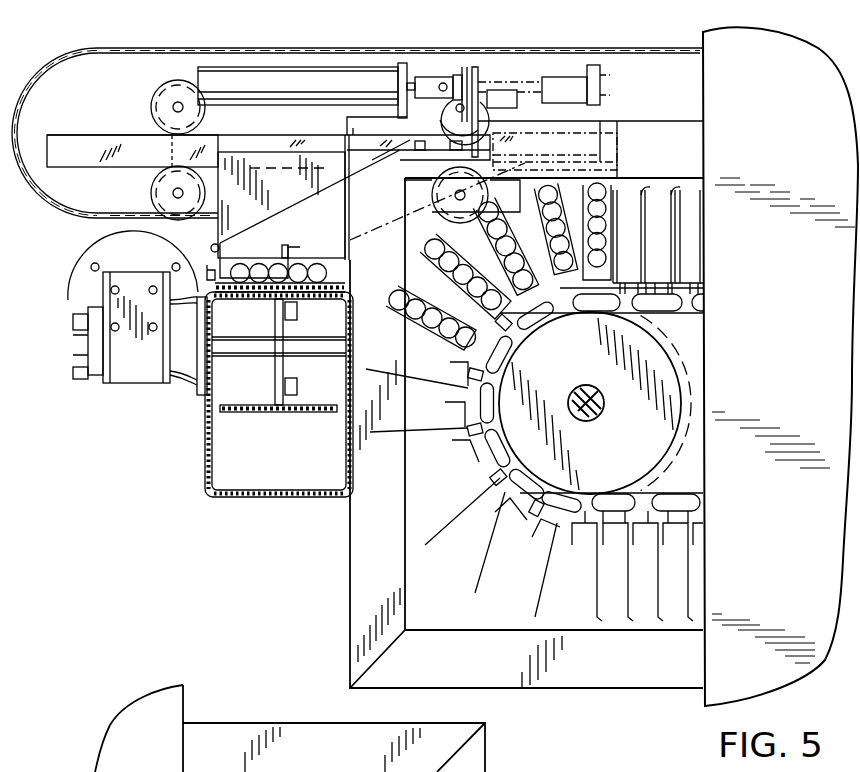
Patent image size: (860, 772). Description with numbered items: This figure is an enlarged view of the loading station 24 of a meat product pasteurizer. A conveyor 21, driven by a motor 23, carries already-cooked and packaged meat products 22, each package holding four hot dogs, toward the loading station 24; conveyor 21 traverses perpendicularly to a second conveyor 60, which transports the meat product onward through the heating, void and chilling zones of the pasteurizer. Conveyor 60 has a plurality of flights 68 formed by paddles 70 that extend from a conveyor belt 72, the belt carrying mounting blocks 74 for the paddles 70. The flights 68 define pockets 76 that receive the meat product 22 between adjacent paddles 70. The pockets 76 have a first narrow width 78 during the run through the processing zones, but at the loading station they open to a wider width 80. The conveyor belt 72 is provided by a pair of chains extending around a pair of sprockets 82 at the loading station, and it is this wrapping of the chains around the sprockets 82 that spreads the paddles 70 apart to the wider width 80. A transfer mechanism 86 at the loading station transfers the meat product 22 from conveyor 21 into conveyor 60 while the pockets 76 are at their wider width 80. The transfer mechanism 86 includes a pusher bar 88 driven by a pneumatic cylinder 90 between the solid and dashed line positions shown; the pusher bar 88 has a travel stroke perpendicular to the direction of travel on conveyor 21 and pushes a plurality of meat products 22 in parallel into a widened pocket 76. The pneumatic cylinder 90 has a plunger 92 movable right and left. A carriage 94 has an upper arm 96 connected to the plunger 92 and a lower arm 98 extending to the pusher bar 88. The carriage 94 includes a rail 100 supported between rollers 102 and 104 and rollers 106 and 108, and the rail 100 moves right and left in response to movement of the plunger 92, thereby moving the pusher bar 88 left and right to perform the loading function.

The conveyor 21 is at (304, 293).
The meat product 22 is at (308, 258).
The motor 23 is at (77, 263).
The loading station 24 is at (336, 505).
The conveyor 60 is at (656, 313).
The flights 68 is at (686, 196).
The paddles 70 is at (676, 207).
The conveyor belt 72 is at (668, 292).
The mounting blocks 74 is at (693, 302).
The pockets 76 is at (658, 210).
The first narrow width 78 is at (648, 237).
The wider width 80 is at (406, 264).
The sprockets 82 is at (662, 446).
The transfer mechanism 86 is at (295, 250).
The pusher bar 88 is at (212, 272).
The pneumatic cylinder 90 is at (297, 72).
The plunger 92 is at (513, 82).
The carriage 94 is at (322, 135).
The upper arm 96 is at (475, 70).
The lower arm 98 is at (283, 197).
The rail 100 is at (85, 142).
The roller 102 is at (160, 105).
The roller 104 is at (155, 192).
The roller 106 is at (517, 113).
The roller 108 is at (458, 211).